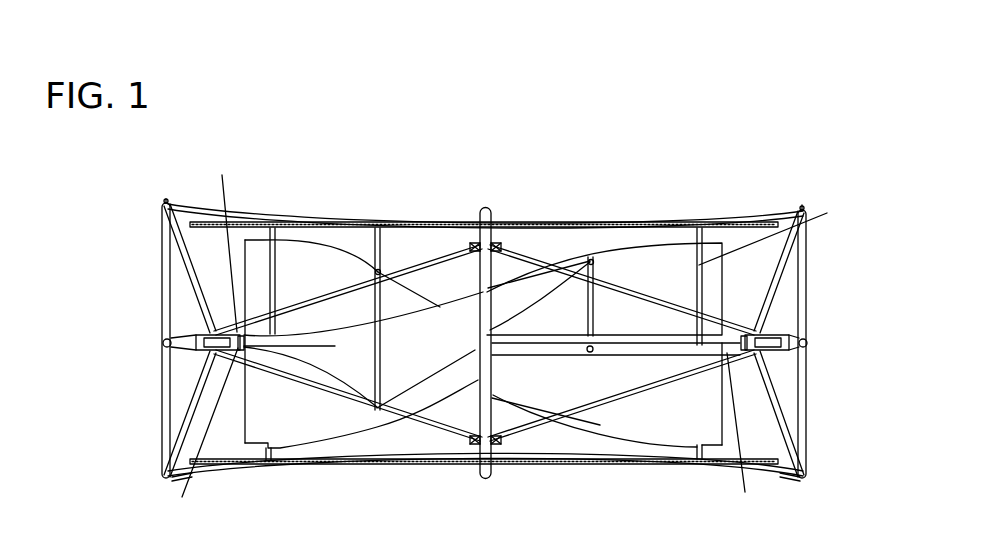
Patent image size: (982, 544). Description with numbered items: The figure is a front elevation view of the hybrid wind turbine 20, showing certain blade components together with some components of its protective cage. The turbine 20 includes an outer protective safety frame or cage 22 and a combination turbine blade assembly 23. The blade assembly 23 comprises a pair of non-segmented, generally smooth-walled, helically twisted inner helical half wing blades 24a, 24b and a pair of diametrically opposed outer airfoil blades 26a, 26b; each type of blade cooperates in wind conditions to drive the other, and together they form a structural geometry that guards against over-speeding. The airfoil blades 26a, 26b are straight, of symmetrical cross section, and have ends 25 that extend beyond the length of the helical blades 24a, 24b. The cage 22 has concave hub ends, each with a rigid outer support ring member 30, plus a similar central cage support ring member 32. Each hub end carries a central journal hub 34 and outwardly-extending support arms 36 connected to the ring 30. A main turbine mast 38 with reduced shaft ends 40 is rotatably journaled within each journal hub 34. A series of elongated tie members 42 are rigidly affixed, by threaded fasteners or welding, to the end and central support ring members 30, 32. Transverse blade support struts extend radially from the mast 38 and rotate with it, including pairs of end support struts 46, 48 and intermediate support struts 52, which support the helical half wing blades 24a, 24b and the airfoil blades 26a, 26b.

The hybrid wind turbine 20 is at (672, 198).
The outer protective safety frame or cage 22 is at (733, 201).
The combination turbine blade assembly 23 is at (738, 298).
The helical half wing blade 24a is at (712, 430).
The helical half wing blade 24b is at (317, 418).
The ends of airfoil blades 25 is at (168, 202).
The outer airfoil blade 26a is at (558, 457).
The outer airfoil blade 26b is at (564, 225).
The rigid outer support ring member 30 is at (164, 224).
The central cage support ring member 32 is at (482, 208).
The central journal hub 34 is at (203, 328).
The support arms 36 is at (180, 242).
The main turbine mast 38 is at (195, 438).
The reduced shaft ends 40 is at (485, 336).
The elongated tie members 42 is at (523, 258).
The end support strut 46 is at (645, 495).
The end support strut 48 is at (274, 245).
The intermediate support struts 52 is at (377, 268).